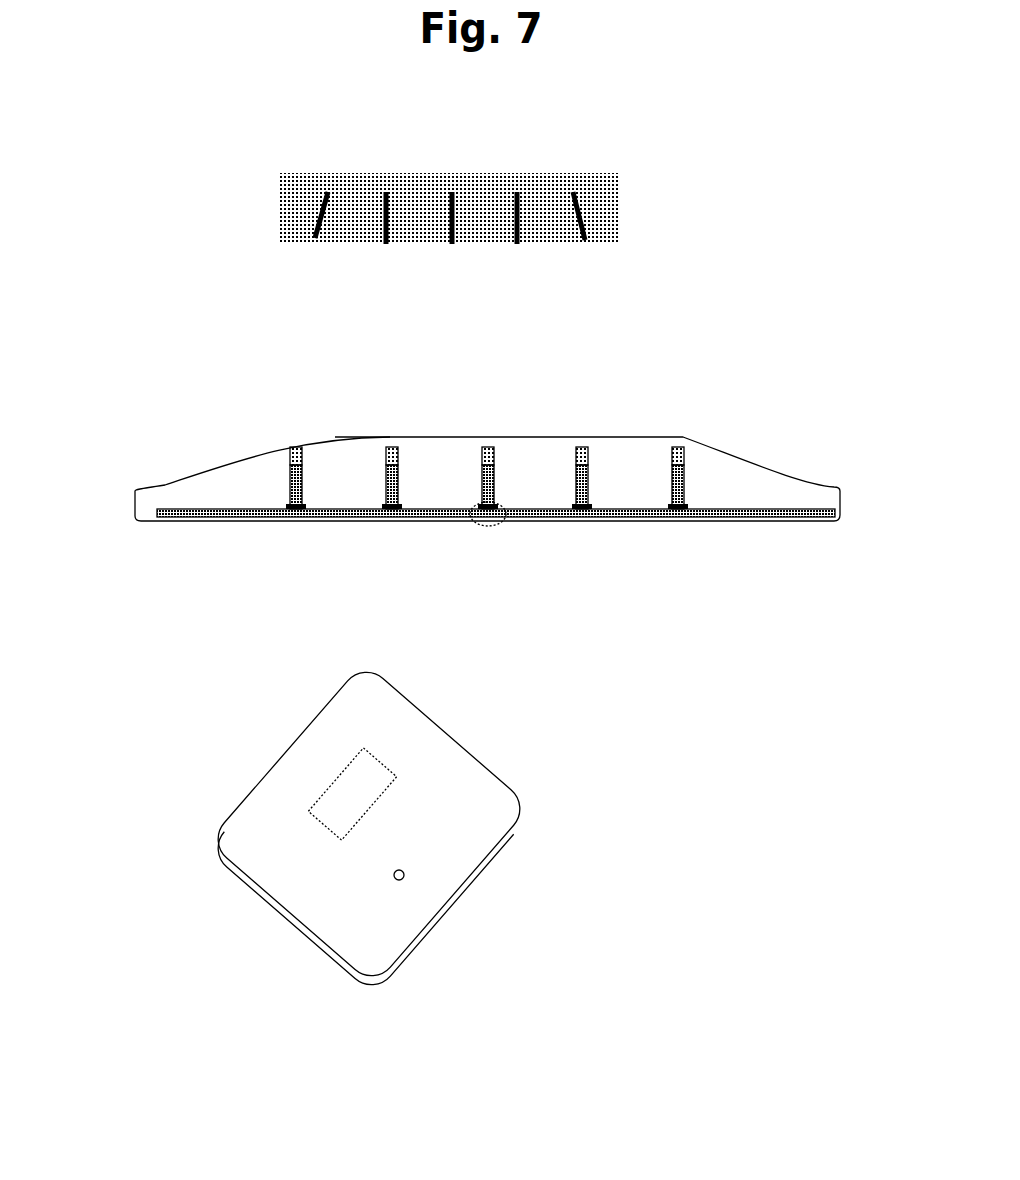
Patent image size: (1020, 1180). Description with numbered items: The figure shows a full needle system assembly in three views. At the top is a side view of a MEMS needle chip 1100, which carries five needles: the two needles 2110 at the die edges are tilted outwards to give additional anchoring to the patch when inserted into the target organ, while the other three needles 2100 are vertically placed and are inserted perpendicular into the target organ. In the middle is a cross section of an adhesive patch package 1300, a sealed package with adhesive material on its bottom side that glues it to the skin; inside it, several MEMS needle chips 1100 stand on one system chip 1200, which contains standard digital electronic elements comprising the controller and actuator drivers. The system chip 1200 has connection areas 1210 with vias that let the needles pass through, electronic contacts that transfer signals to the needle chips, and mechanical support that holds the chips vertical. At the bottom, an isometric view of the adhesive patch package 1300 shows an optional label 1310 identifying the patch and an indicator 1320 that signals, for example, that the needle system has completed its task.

The MEMS needle chip 1100 is at (530, 413).
The system chip 1200 is at (745, 507).
The connection area 1210 is at (490, 528).
The adhesive patch package 1300 is at (266, 756).
The label 1310 is at (320, 835).
The indicator 1320 is at (397, 884).
The needles 2100 is at (517, 248).
The needles 2110 is at (318, 224).